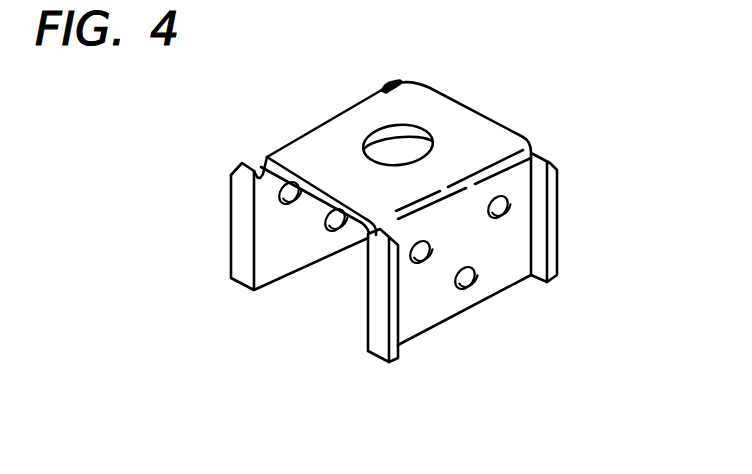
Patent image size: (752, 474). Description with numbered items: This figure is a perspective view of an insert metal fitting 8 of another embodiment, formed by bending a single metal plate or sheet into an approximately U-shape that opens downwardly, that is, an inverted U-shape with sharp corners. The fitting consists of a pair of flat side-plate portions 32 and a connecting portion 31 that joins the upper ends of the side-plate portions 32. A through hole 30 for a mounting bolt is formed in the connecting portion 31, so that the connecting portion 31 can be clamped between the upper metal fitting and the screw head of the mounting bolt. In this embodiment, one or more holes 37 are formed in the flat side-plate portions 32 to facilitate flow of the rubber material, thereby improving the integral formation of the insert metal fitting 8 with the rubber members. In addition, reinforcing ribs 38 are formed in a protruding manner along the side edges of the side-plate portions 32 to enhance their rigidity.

The insert metal fitting 8 is at (496, 96).
The through hole 30 is at (392, 133).
The connecting portion 31 is at (310, 142).
The flat side-plate portions 32 is at (510, 241).
The holes 37 is at (278, 205).
The reinforcing ribs 38 is at (553, 202).